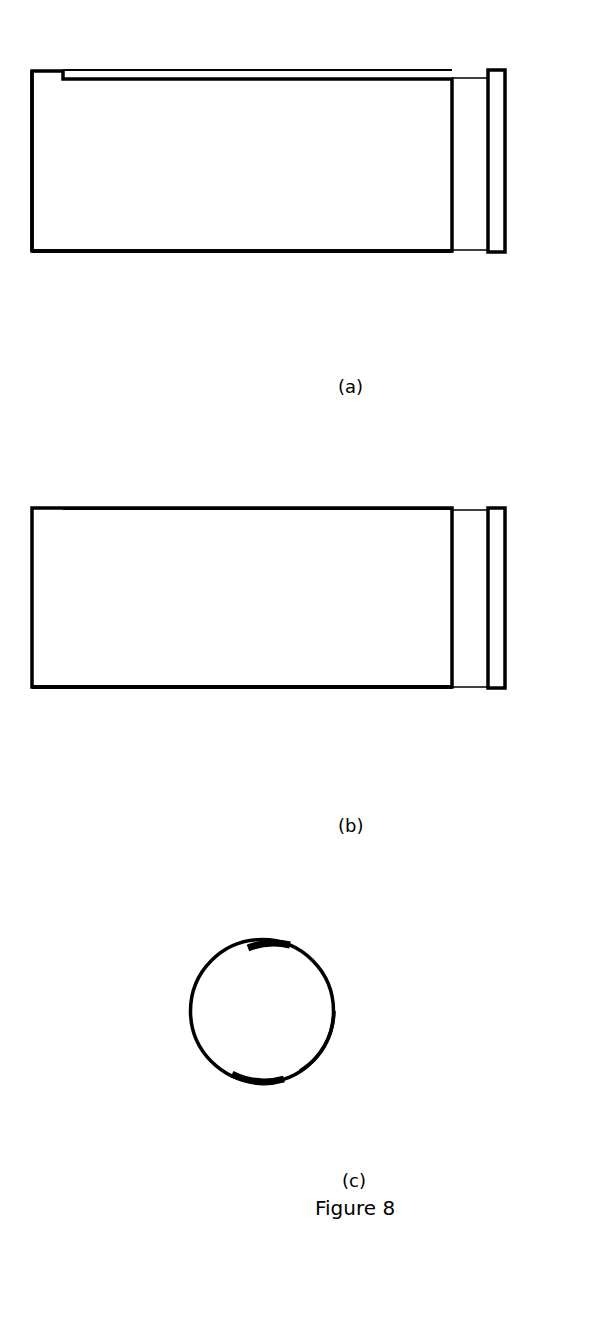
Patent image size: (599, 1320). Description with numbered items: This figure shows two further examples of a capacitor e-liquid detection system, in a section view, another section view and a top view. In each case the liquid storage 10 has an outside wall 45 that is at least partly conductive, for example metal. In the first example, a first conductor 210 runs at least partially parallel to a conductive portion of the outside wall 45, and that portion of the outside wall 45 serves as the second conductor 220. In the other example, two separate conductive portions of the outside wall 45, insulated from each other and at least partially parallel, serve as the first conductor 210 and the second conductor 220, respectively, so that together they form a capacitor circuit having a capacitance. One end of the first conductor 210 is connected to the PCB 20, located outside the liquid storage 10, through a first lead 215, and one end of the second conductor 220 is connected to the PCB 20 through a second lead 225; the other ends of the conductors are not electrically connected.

The liquid storage 10 is at (65, 103).
The PCB 20 is at (498, 153).
The outside wall 45 is at (217, 252).
The first conductor 210 is at (400, 45).
The first lead 215 is at (467, 77).
The second conductor 220 is at (370, 252).
The second lead 225 is at (472, 250).